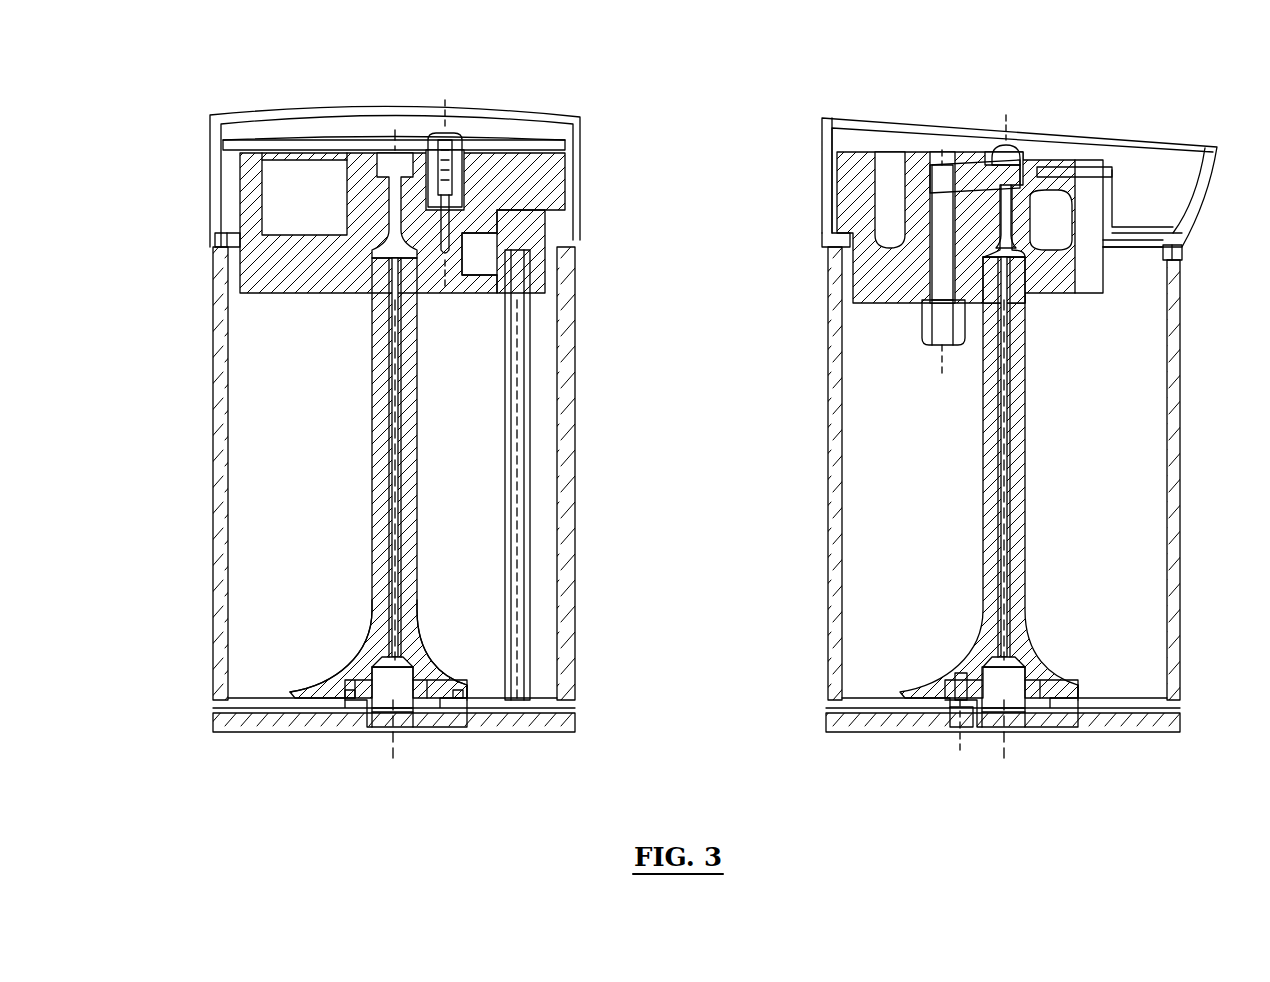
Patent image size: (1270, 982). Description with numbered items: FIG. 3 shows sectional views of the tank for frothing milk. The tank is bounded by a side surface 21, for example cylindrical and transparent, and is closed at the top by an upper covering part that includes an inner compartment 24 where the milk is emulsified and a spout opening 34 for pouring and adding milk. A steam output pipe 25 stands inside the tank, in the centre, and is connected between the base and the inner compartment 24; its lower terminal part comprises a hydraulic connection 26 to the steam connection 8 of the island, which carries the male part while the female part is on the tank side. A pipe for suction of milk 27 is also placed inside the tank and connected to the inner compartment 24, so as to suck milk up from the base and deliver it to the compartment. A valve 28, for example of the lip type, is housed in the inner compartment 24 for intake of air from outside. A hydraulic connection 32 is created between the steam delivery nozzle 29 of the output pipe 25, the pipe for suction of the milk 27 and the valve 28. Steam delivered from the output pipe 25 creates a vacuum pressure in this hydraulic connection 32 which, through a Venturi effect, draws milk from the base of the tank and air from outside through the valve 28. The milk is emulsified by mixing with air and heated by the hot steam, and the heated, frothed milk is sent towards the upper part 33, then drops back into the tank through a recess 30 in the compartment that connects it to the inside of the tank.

The steam connection 8 is at (388, 690).
The side surface 21 is at (255, 407).
The inner compartment 24 is at (488, 168).
The steam output pipe 25 is at (385, 535).
The hydraulic connection 26 is at (420, 680).
The pipe for suction of milk 27 is at (522, 412).
The valve 28 is at (443, 130).
The steam delivery nozzle 29 is at (270, 298).
The recess 30 is at (935, 308).
The hydraulic connection 32 is at (495, 212).
The upper part 33 is at (948, 172).
The spout opening 34 is at (1167, 165).